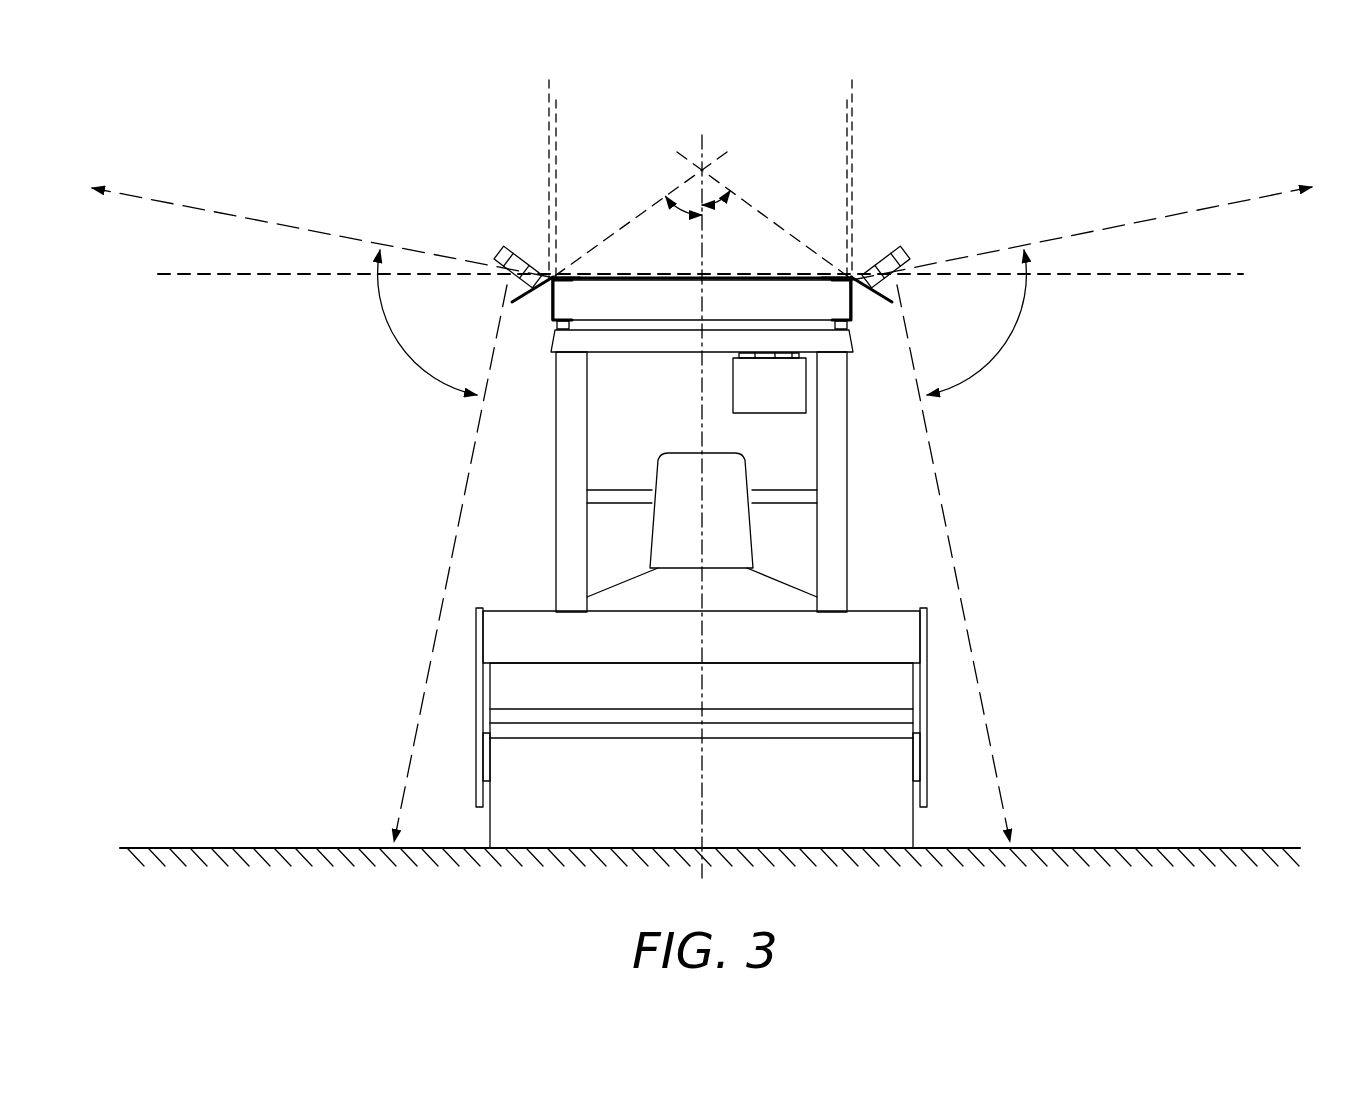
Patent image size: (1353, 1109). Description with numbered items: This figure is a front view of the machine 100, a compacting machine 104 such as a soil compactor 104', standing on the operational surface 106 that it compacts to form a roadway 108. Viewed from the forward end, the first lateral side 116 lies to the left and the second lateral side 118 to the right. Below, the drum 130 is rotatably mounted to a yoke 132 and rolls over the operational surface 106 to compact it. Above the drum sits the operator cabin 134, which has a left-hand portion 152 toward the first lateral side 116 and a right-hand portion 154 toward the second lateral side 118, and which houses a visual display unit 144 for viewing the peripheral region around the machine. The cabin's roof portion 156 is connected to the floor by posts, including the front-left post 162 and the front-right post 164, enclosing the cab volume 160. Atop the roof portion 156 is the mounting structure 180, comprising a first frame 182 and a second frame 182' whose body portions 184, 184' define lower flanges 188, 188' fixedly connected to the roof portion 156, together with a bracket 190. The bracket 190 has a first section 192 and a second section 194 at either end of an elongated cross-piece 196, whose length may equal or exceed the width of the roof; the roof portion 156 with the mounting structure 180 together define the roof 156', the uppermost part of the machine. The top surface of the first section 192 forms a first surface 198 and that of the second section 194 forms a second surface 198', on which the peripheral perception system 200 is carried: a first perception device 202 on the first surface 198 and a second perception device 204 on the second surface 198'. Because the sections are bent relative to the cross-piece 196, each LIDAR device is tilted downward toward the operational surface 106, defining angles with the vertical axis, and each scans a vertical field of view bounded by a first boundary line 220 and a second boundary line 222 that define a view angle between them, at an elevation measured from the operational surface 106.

The machine 100 is at (1080, 158).
The compacting machine 104 is at (1124, 179).
The soil compactor 104' is at (1061, 112).
The operational surface 106 is at (290, 848).
The roadway 108 is at (243, 848).
The first lateral side 116 is at (433, 450).
The second lateral side 118 is at (967, 450).
The drum 130 is at (855, 800).
The yoke 132 is at (923, 690).
The operator cabin 134 is at (552, 578).
The visual display unit 144 is at (796, 398).
The left-hand portion 152 is at (543, 443).
The right-hand portion 154 is at (860, 443).
The roof portion 156 is at (735, 279).
The roof 156' is at (788, 225).
The cab volume 160 is at (618, 442).
The front-left post 162 is at (562, 536).
The front-right post 164 is at (835, 533).
The mounting structure 180 is at (682, 273).
The first frame 182 is at (510, 230).
The second frame 182' is at (944, 341).
The body portion 184 is at (600, 300).
The body portion 184' is at (857, 338).
The lower flange 188 is at (609, 354).
The lower flange 188' is at (818, 308).
The bracket 190 is at (848, 275).
The first section 192 is at (512, 305).
The second section 194 is at (897, 297).
The cross-piece 196 is at (613, 277).
The first surface 198 is at (463, 324).
The second surface 198' is at (938, 319).
The peripheral perception system 200 is at (475, 247).
The first perception device 202 is at (495, 248).
The second perception device 204 is at (903, 255).
The first boundary line 220 is at (160, 198).
The second boundary line 222 is at (404, 778).